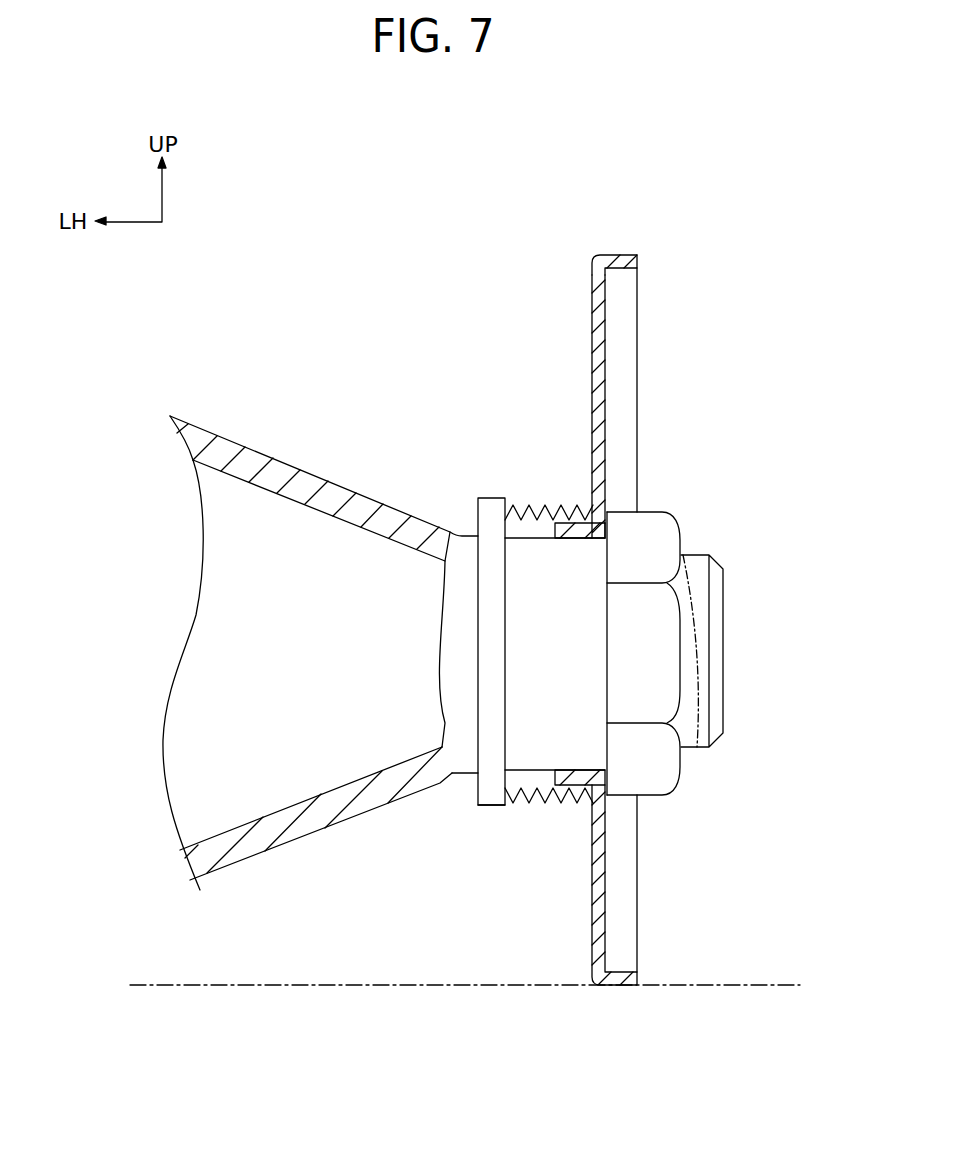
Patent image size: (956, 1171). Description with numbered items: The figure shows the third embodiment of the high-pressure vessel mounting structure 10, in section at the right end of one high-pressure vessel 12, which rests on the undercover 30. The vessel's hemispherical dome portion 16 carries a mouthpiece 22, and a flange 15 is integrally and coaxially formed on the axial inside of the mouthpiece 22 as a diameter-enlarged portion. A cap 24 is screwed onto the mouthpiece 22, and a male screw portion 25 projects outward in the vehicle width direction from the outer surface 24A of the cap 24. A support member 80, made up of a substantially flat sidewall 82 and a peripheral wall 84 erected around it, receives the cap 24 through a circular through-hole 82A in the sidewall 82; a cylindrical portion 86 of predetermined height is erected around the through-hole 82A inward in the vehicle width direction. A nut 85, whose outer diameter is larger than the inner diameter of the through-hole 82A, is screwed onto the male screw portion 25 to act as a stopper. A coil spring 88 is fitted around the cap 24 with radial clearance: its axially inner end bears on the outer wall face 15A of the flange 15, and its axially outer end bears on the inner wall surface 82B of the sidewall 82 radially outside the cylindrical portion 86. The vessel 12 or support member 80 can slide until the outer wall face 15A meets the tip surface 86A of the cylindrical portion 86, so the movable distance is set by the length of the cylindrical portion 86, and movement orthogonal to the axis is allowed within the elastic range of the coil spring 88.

The high-pressure vessel mounting structure 10 is at (423, 337).
The high-pressure vessel 12 is at (262, 468).
The flange 15 is at (487, 497).
The outer wall face of the flange 15A is at (513, 807).
The dome portion 16 is at (342, 507).
The mouthpiece 22 is at (477, 693).
The cap 24 is at (535, 645).
The outer surface of the cap 24A is at (608, 664).
The male screw portion 25 is at (723, 640).
The undercover 30 is at (727, 985).
The support member 80 is at (642, 335).
The sidewall 82 is at (592, 318).
The through-hole 82A is at (585, 549).
The inner wall surface of the sidewall 82B is at (592, 880).
The peripheral wall 84 is at (600, 254).
The nut 85 is at (663, 538).
The cylindrical portion 86 is at (565, 540).
The tip surface of the cylindrical portion 86A is at (547, 766).
The coil spring 88 is at (537, 503).